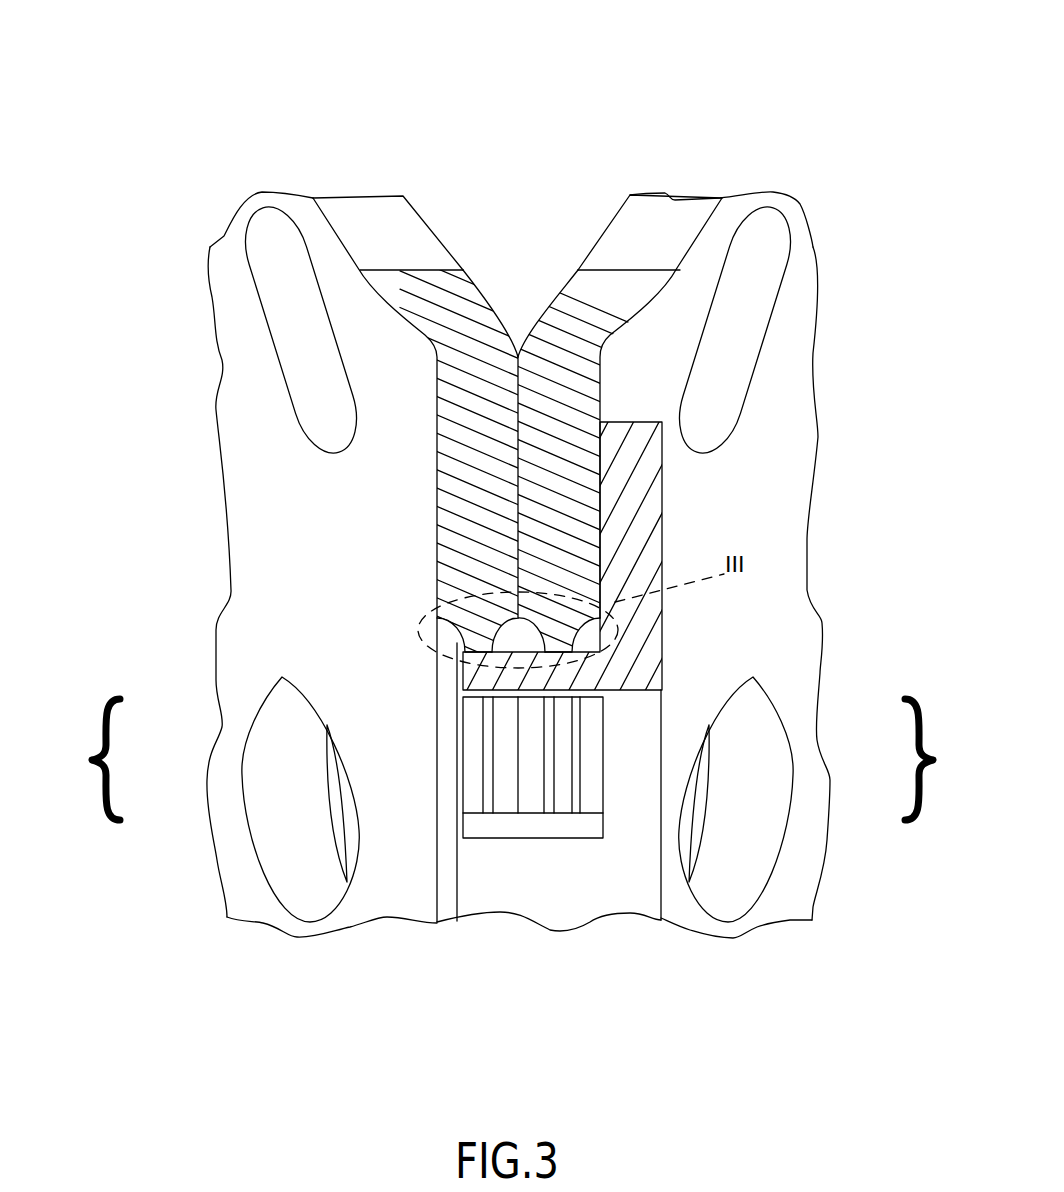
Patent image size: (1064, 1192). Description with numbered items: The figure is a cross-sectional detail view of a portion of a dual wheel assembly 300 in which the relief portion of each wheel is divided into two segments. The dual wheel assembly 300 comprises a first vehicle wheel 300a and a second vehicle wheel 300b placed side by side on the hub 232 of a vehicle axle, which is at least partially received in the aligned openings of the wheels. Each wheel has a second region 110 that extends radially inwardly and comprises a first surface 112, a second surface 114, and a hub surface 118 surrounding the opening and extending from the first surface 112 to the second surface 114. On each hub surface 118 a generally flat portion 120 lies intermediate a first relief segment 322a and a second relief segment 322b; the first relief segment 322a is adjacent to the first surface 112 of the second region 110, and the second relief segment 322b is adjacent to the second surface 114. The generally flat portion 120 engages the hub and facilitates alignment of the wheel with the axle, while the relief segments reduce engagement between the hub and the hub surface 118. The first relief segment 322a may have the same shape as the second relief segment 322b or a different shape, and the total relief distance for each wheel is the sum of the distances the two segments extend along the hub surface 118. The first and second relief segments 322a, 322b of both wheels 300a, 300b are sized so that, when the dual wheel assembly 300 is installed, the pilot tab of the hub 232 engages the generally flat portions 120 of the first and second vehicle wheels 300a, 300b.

The dual wheel assembly 300 is at (340, 140).
The first vehicle wheel 300a is at (230, 260).
The second vehicle wheel 300b is at (810, 257).
The second region 110 is at (403, 178).
The first surface 112 is at (432, 232).
The second surface 114 is at (432, 425).
The hub surface 118 is at (510, 767).
The generally flat portion 120 is at (482, 742).
The first relief segment 322a is at (508, 785).
The second relief segment 322b is at (450, 703).
The hub 232 is at (645, 632).